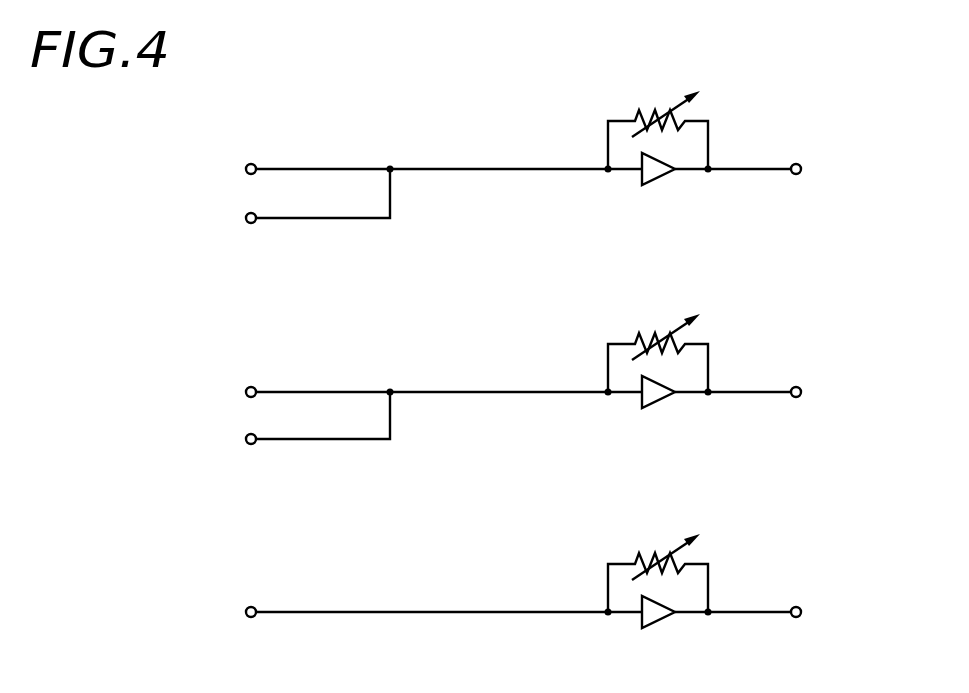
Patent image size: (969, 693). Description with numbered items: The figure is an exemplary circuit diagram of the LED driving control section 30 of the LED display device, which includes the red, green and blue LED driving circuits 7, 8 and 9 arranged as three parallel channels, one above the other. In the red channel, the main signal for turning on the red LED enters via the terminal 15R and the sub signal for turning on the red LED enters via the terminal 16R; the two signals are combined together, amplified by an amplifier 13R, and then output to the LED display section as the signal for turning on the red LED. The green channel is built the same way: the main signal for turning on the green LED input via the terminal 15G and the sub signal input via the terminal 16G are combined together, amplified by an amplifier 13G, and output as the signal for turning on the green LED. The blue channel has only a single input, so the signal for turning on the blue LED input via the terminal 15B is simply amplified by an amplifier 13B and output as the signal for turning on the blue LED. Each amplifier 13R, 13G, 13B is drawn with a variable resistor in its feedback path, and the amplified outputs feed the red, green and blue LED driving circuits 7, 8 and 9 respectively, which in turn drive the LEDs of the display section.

The LED driving control section 30 is at (522, 127).
The red LED driving circuit 7 is at (838, 146).
The green LED driving circuit 8 is at (831, 387).
The blue LED driving circuit 9 is at (833, 608).
The amplifier 13R is at (657, 177).
The amplifier 13G is at (657, 400).
The amplifier 13B is at (657, 620).
The terminal 15R is at (289, 169).
The terminal 16R is at (289, 203).
The terminal 15G is at (289, 392).
The terminal 16G is at (289, 425).
The terminal 15B is at (415, 612).